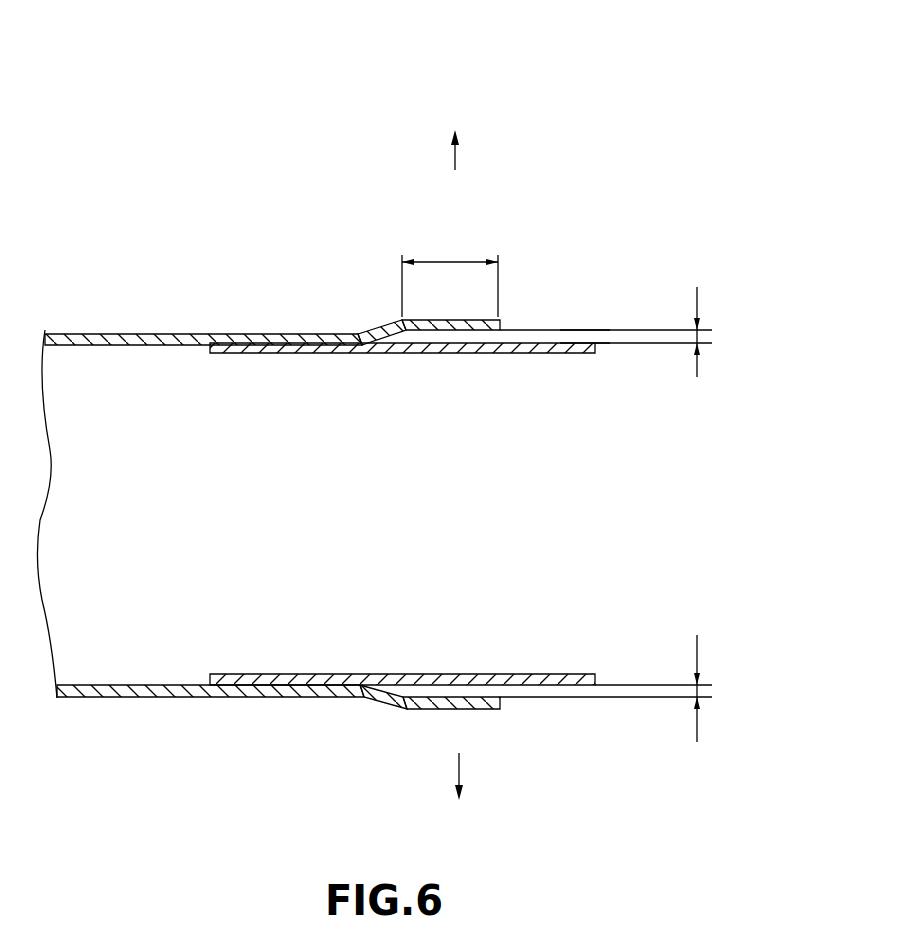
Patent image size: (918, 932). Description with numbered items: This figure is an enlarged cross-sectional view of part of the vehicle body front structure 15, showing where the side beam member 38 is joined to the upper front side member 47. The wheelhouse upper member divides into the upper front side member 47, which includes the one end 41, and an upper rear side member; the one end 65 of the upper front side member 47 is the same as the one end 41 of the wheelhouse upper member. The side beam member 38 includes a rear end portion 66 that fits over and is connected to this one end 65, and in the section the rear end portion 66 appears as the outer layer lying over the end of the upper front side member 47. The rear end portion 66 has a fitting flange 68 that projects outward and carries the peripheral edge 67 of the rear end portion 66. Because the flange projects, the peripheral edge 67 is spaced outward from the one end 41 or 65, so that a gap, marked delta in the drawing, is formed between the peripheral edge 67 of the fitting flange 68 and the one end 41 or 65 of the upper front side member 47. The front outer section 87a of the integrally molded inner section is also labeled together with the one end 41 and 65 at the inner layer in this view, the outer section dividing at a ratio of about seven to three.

The vehicle body front structure 15 is at (333, 125).
The side beam member 38 is at (171, 334).
The rear end portion of the side beam member 66 is at (358, 334).
The peripheral edge of the rear end of the side beam member 67 is at (481, 319).
The fitting flange 68 is at (450, 261).
The upper front side member 47 is at (585, 332).
The one end of the upper member 41 is at (494, 354).
The one end of the upper front side member 65 is at (402, 514).
The front outer section 87a is at (402, 514).